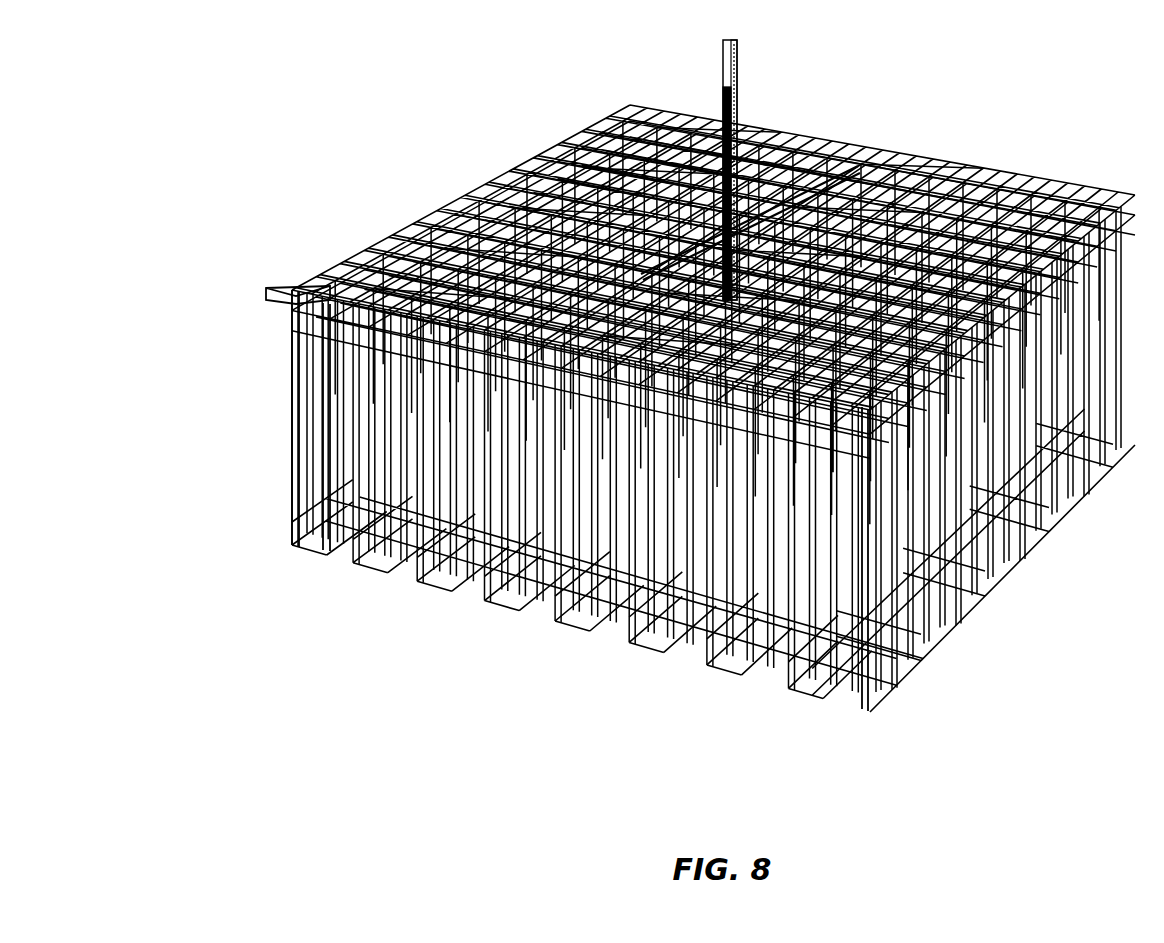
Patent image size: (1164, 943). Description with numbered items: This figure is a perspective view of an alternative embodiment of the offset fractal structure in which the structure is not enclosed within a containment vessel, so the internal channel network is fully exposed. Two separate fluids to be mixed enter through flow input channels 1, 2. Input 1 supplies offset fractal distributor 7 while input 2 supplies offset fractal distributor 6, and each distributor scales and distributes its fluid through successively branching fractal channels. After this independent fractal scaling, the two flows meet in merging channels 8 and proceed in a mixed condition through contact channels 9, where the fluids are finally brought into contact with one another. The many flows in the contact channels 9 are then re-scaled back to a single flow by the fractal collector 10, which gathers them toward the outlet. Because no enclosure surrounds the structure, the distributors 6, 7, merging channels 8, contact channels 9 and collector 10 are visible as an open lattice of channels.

The flow input channel 1 is at (720, 108).
The flow input channel 2 is at (740, 60).
The offset fractal distributor 6 is at (284, 288).
The offset fractal distributor 7 is at (324, 303).
The merging channel 8 is at (292, 305).
The contact channel 9 is at (291, 478).
The fractal collector 10 is at (345, 550).